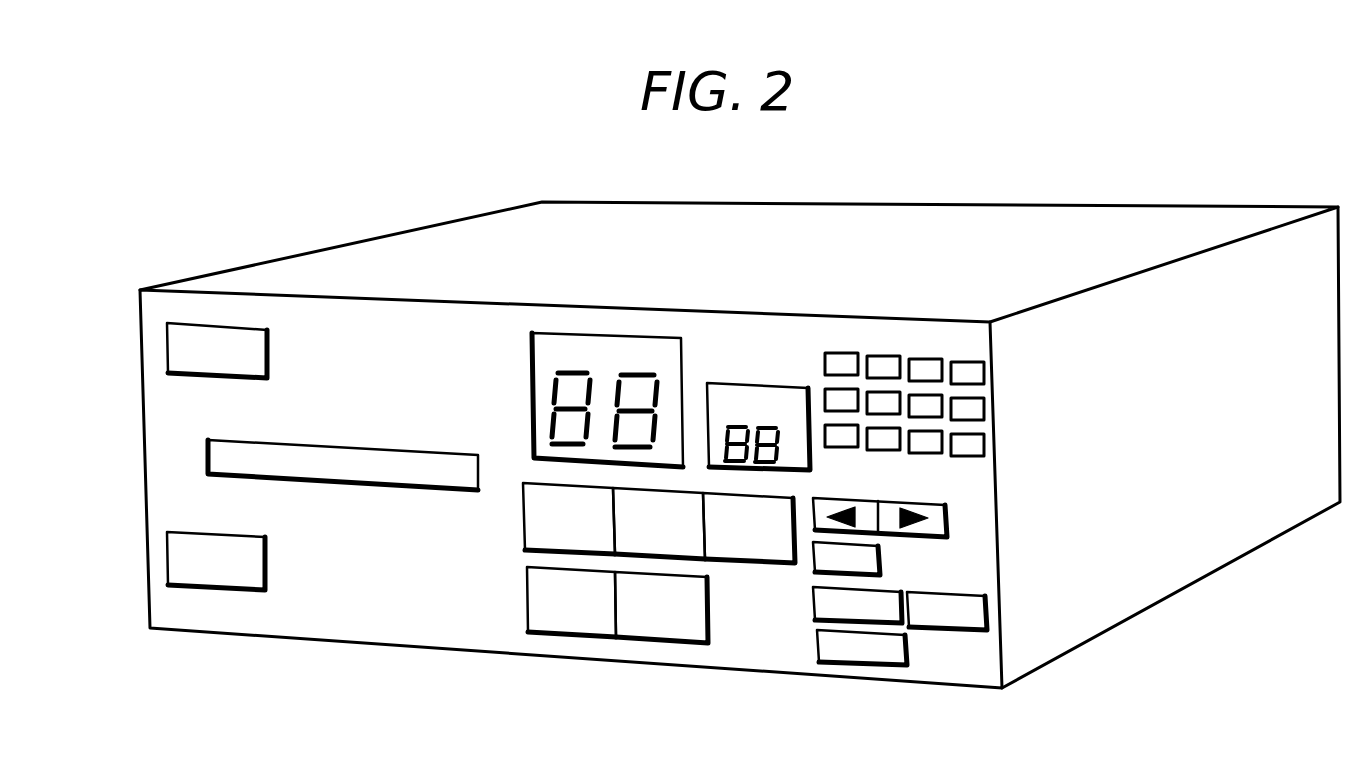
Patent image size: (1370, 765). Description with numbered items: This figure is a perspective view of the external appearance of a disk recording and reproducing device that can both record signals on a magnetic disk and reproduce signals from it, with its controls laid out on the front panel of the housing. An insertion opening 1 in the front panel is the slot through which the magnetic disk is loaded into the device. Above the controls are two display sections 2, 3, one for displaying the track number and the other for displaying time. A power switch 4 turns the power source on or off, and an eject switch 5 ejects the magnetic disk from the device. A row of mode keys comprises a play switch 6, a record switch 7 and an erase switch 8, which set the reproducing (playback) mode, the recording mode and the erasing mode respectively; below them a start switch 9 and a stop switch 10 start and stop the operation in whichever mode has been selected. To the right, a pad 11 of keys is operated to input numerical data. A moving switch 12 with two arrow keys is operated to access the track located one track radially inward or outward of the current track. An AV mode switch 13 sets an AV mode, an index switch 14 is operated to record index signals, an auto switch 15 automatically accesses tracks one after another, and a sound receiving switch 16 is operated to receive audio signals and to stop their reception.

The insertion opening 1 is at (207, 460).
The display section 2 is at (602, 333).
The display section 3 is at (753, 383).
The power switch 4 is at (168, 352).
The eject switch 5 is at (167, 553).
The play switch 6 is at (522, 544).
The record switch 7 is at (733, 563).
The erase switch 8 is at (767, 563).
The start switch 9 is at (580, 637).
The stop switch 10 is at (673, 641).
The pad 11 is at (997, 462).
The moving switch 12 is at (947, 521).
The AV mode switch 13 is at (880, 562).
The index switch 14 is at (813, 612).
The auto switch 15 is at (987, 613).
The sound receiving switch 16 is at (887, 666).